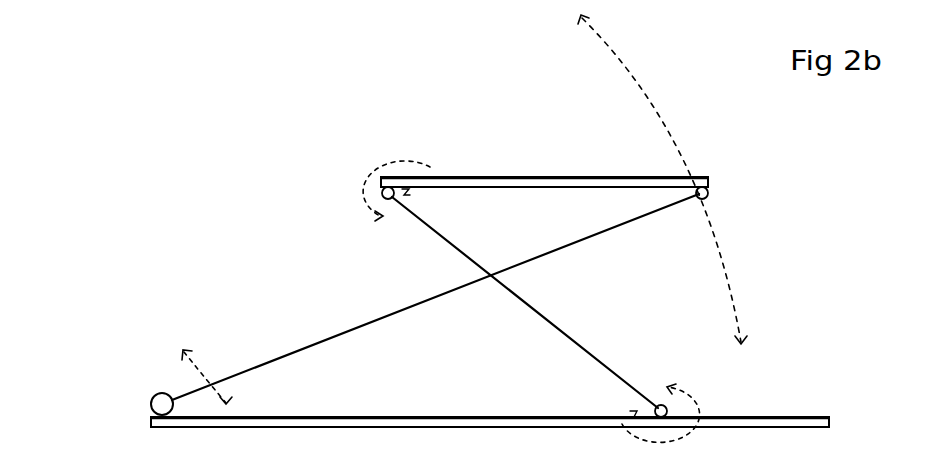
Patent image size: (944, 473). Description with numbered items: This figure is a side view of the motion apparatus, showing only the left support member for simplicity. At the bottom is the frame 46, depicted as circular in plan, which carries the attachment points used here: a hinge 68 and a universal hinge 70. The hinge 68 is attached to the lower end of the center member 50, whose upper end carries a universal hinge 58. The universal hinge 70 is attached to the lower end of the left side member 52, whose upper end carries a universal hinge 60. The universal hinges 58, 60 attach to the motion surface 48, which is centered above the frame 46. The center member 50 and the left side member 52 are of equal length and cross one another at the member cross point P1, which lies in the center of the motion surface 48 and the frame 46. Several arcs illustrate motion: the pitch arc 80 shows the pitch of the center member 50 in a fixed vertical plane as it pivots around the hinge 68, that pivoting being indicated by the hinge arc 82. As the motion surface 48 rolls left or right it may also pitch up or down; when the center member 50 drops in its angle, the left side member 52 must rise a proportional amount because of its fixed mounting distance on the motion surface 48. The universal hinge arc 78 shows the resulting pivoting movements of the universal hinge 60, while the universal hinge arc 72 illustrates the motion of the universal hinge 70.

The frame 46 is at (432, 432).
The motion surface 48 is at (532, 172).
The center member 50 is at (272, 358).
The left side member 52 is at (563, 346).
The member cross point P1 is at (510, 281).
The universal hinge 58 is at (716, 193).
The universal hinge 60 is at (375, 198).
The hinge 68 is at (147, 404).
The universal hinge 70 is at (665, 416).
The universal hinge arc 72 is at (702, 395).
The universal hinge arc 78 is at (387, 166).
The pitch arc 80 is at (590, 33).
The hinge arc 82 is at (170, 346).